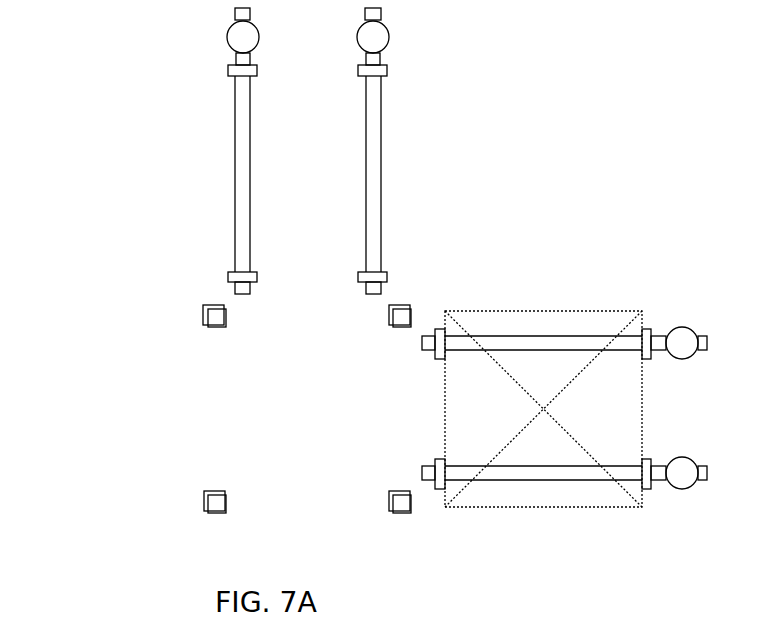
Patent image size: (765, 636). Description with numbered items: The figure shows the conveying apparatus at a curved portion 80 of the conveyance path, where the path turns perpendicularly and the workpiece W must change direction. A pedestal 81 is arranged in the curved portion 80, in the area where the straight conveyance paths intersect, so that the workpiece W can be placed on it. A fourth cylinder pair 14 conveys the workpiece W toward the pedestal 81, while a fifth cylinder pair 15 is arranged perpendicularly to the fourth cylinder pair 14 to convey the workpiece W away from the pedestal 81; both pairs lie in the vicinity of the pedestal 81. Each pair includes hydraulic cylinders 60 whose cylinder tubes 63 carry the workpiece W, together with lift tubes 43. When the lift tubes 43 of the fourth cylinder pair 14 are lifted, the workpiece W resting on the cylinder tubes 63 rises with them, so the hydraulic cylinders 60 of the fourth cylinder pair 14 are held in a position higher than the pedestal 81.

The lift tube 43 is at (227, 37).
The cylinder tube 63 is at (235, 196).
The pedestal 81 is at (210, 314).
The fourth cylinder pair 14 is at (606, 300).
The workpiece W is at (522, 310).
The fifth cylinder pair 15 is at (404, 112).
The hydraulic cylinder 60 is at (650, 522).
The curved portion 80 is at (128, 413).